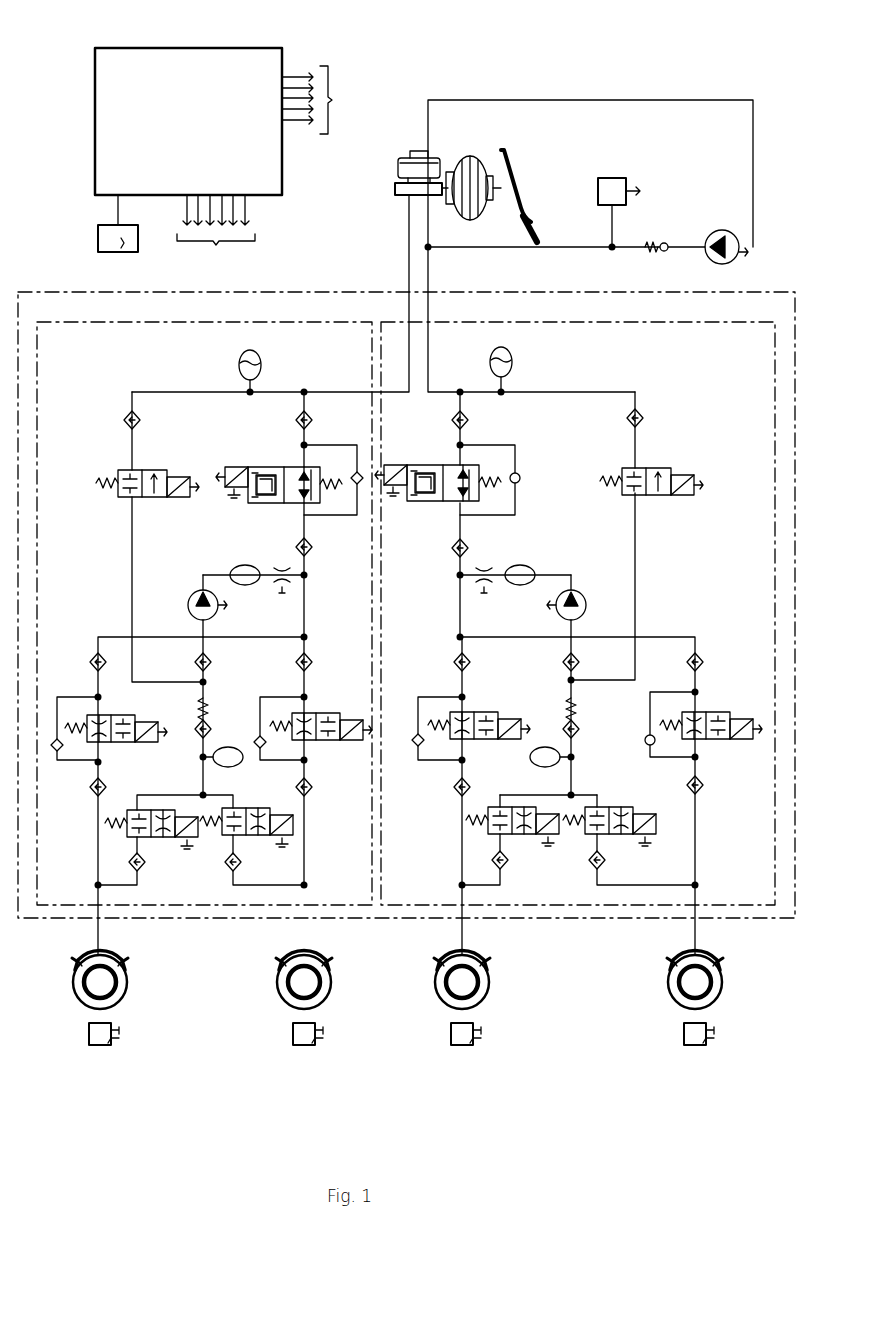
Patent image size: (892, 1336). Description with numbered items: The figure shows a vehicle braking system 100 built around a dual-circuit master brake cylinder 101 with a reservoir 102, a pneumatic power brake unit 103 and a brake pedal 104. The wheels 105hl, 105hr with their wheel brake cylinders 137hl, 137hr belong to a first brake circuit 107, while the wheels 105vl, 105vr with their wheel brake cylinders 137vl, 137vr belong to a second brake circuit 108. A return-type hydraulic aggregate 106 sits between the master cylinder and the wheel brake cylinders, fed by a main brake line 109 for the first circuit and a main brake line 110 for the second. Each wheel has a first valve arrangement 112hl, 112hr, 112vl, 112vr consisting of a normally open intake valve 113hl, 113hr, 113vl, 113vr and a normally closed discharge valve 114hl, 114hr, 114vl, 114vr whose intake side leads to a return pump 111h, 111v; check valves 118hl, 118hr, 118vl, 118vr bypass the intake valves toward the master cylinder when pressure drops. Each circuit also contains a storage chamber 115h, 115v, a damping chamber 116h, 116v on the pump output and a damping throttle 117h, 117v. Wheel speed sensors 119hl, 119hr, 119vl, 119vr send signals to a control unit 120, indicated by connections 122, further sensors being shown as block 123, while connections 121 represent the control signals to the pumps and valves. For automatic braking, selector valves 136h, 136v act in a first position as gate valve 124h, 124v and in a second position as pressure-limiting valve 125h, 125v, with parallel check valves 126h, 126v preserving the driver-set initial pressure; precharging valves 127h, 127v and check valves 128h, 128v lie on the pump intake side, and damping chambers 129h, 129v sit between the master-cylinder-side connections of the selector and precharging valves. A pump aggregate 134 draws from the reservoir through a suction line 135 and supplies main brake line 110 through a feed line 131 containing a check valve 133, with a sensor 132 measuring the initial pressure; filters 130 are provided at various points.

The brake system 100 is at (591, 78).
The dual-circuit master brake cylinder 101 is at (395, 188).
The reservoir 102 is at (404, 159).
The pneumatic power brake unit 103 is at (464, 158).
The brake pedal 104 is at (530, 216).
The wheel 105hl is at (108, 988).
The wheel 105hr is at (339, 984).
The wheel 105vl is at (495, 984).
The wheel 105vr is at (729, 984).
The hydraulic aggregate 106 is at (606, 920).
The first brake circuit 107 is at (37, 400).
The second brake circuit 108 is at (775, 392).
The main brake line 109 is at (409, 248).
The main brake line 110 is at (428, 268).
The return pump 111h is at (196, 596).
The return pump 111v is at (592, 584).
The first valve arrangement 112hl is at (92, 750).
The first valve arrangement 112hr is at (320, 748).
The first valve arrangement 112vl is at (470, 745).
The first valve arrangement 112vr is at (714, 750).
The intake valve 113hl is at (110, 742).
The intake valve 113hr is at (318, 713).
The intake valve 113vl is at (470, 712).
The intake valve 113vr is at (718, 712).
The discharge valve 114hl is at (152, 838).
The discharge valve 114hr is at (246, 808).
The discharge valve 114vl is at (512, 833).
The discharge valve 114vr is at (611, 807).
The storage chamber 115h is at (230, 746).
The storage chamber 115v is at (545, 746).
The damping chamber 116h is at (232, 567).
The damping chamber 116v is at (526, 567).
The damping throttle 117h is at (273, 590).
The damping throttle 117v is at (486, 590).
The check valve 118hl is at (57, 735).
The check valve 118hr is at (260, 734).
The check valve 118vl is at (418, 748).
The check valve 118vr is at (648, 738).
The wheel speed sensor 119hl is at (100, 1046).
The wheel speed sensor 119hr is at (304, 1046).
The wheel speed sensor 119vl is at (462, 1046).
The wheel speed sensor 119vr is at (695, 1046).
The control unit 120 is at (226, 58).
The connections 121 is at (326, 100).
The connections 122 is at (216, 233).
The block 123 is at (98, 236).
The gate valve 124h is at (318, 500).
The gate valve 124v is at (472, 498).
The pressure-limiting valve 125h is at (258, 467).
The pressure-limiting valve 125v is at (414, 465).
The check valve 126h is at (356, 469).
The check valve 126v is at (520, 474).
The precharging valve 127h is at (160, 497).
The precharging valve 127v is at (648, 493).
The check valve 128h is at (198, 708).
The check valve 128v is at (568, 706).
The damping chamber 129h is at (260, 360).
The damping chamber 129v is at (510, 368).
The filter 130 is at (126, 426).
The feed line 131 is at (557, 247).
The sensor 132 is at (616, 178).
The check valve 133 is at (650, 247).
The pump aggregate 134 is at (722, 230).
The suction line 135 is at (528, 99).
The selector valve 136h is at (278, 511).
The selector valve 136v is at (438, 514).
The wheel brake cylinder 137hl is at (78, 962).
The wheel brake cylinder 137hr is at (330, 960).
The wheel brake cylinder 137vl is at (482, 960).
The wheel brake cylinder 137vr is at (724, 960).